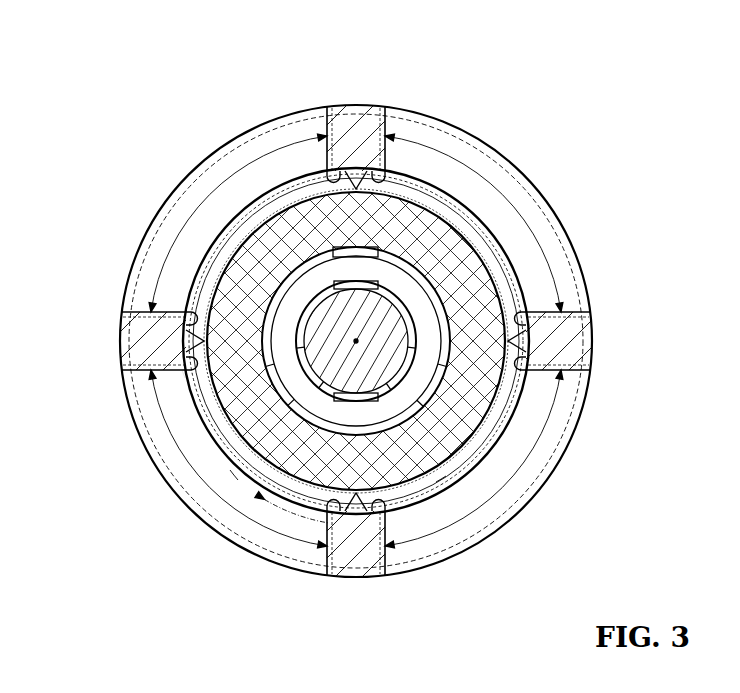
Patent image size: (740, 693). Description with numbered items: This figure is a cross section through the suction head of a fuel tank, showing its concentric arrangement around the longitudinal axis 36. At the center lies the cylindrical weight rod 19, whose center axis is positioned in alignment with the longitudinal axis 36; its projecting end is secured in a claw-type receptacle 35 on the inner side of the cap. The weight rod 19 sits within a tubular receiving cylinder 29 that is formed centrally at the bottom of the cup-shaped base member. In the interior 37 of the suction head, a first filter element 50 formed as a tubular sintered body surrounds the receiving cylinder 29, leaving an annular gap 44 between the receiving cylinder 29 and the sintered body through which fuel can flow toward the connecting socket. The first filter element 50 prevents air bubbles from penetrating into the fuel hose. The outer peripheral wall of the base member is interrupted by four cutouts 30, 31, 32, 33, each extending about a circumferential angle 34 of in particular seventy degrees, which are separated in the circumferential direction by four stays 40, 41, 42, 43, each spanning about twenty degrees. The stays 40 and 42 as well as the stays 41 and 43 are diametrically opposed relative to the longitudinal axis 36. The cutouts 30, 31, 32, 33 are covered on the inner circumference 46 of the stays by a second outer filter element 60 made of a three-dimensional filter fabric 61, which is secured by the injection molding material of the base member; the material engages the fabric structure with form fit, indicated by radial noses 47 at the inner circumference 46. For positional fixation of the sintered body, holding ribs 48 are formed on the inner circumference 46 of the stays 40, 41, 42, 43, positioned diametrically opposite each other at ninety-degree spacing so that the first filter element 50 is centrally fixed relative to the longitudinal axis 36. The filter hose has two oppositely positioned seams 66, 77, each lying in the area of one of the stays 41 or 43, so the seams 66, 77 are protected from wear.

The weight rod 19 is at (492, 445).
The receiving cylinder 29 is at (486, 228).
The cutout 30 is at (193, 190).
The cutout 31 is at (497, 180).
The cutout 32 is at (510, 492).
The cutout 33 is at (172, 462).
The circumferential angle 34 is at (182, 235).
The claw-type receptacle 35 is at (230, 470).
The longitudinal axis 36 is at (358, 340).
The interior 37 is at (502, 262).
The stay 40 is at (350, 126).
The stay 41 is at (562, 342).
The stay 42 is at (356, 560).
The stay 43 is at (150, 340).
The annular gap 44 is at (405, 256).
The inner circumference 46 is at (207, 383).
The radial nose 47 is at (530, 386).
The holding rib 48 is at (381, 168).
The first filter element 50 is at (475, 390).
The second filter element 60 is at (264, 500).
The filter fabric 61 is at (441, 487).
The seam 66 is at (535, 311).
The seam 77 is at (190, 380).